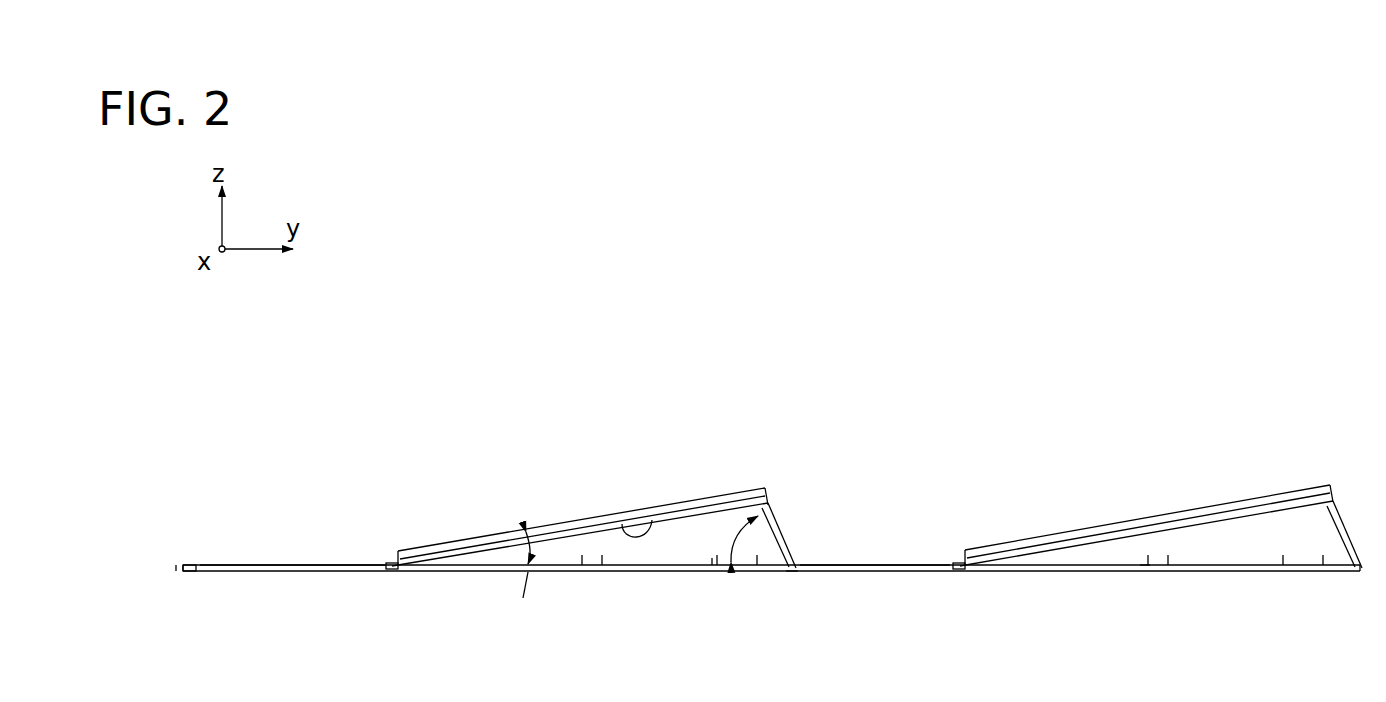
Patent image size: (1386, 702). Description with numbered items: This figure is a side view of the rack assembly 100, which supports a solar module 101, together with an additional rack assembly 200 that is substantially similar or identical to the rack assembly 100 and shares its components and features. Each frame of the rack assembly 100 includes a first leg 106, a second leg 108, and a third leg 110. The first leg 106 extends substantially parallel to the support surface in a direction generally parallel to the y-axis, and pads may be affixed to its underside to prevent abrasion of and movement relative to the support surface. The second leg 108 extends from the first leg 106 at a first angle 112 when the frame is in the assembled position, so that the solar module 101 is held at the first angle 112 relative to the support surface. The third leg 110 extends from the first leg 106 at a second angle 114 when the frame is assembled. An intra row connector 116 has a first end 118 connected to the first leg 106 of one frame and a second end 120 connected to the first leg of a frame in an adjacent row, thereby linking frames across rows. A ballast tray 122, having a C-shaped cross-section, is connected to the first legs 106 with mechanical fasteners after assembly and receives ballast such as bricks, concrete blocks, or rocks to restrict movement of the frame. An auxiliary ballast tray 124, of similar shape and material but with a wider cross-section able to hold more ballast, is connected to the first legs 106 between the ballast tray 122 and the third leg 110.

The rack assembly 100 is at (741, 509).
The additional rack assembly 200 is at (1093, 455).
The solar module 101 is at (665, 505).
The first leg 106 is at (655, 571).
The second leg 108 is at (620, 522).
The third leg 110 is at (773, 512).
The first angle 112 is at (526, 531).
The second angle 114 is at (737, 532).
The intra row connector 116 is at (298, 565).
The first end 118 is at (393, 572).
The second end 120 is at (184, 572).
The ballast tray 122 is at (577, 572).
The auxiliary ballast tray 124 is at (712, 567).